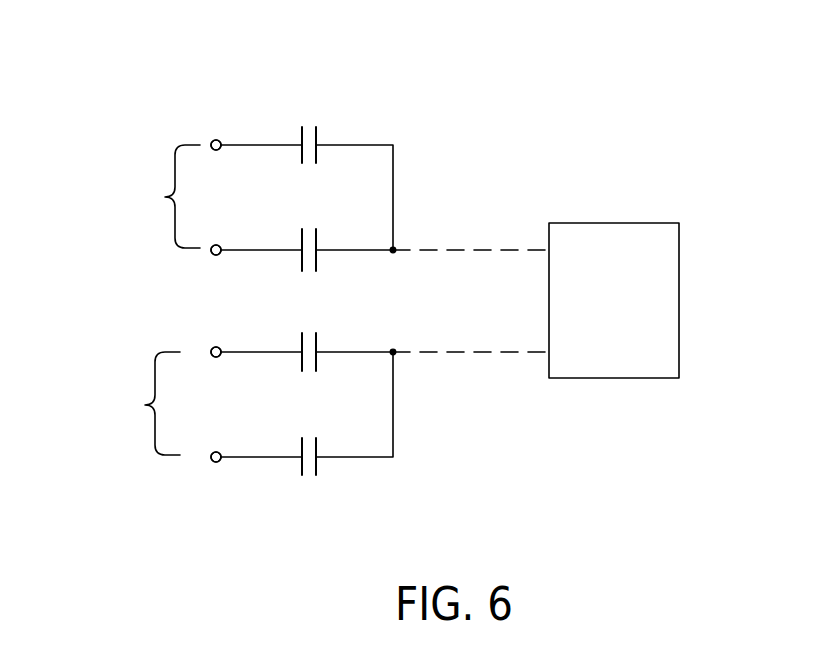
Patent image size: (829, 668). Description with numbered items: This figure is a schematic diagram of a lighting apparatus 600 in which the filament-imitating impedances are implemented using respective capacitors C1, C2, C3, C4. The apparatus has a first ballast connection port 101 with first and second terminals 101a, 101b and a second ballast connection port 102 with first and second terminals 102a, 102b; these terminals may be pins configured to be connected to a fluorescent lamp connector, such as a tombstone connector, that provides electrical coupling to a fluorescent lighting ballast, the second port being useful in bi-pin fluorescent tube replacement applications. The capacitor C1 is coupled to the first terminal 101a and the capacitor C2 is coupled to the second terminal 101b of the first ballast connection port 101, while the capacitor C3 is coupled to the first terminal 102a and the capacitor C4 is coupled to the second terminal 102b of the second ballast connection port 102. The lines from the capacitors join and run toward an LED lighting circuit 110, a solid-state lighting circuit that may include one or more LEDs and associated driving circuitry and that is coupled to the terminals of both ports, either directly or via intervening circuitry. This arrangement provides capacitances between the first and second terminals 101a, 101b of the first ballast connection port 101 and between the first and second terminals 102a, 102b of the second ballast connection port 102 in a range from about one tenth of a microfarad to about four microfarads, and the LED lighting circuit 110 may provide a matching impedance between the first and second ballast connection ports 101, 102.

The lighting apparatus 600 is at (608, 98).
The LED lighting circuit 110 is at (614, 223).
The first ballast connection port 101 is at (161, 196).
The first terminal 101a is at (224, 164).
The second terminal 101b is at (228, 231).
The second ballast connection port 102 is at (143, 403).
The first terminal 102a is at (225, 371).
The second terminal 102b is at (228, 434).
The capacitor C1 is at (309, 128).
The capacitor C2 is at (308, 261).
The capacitor C3 is at (309, 343).
The capacitor C4 is at (309, 470).